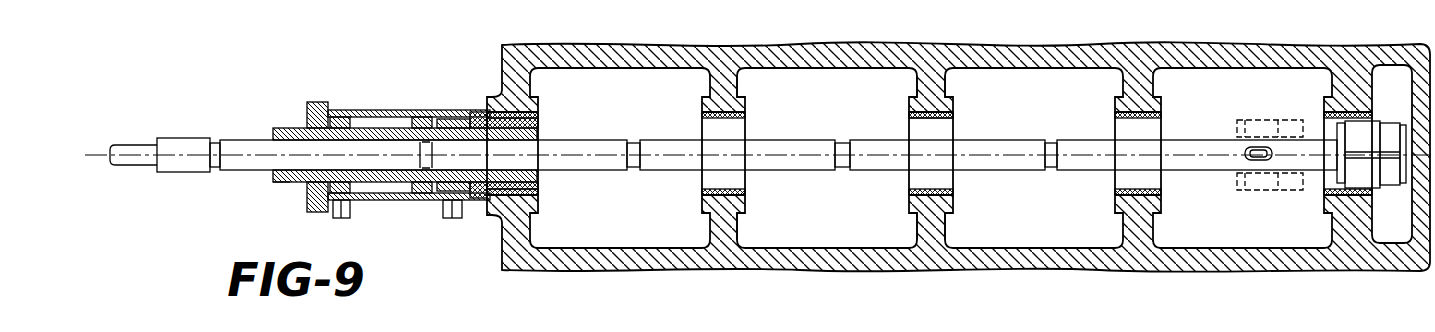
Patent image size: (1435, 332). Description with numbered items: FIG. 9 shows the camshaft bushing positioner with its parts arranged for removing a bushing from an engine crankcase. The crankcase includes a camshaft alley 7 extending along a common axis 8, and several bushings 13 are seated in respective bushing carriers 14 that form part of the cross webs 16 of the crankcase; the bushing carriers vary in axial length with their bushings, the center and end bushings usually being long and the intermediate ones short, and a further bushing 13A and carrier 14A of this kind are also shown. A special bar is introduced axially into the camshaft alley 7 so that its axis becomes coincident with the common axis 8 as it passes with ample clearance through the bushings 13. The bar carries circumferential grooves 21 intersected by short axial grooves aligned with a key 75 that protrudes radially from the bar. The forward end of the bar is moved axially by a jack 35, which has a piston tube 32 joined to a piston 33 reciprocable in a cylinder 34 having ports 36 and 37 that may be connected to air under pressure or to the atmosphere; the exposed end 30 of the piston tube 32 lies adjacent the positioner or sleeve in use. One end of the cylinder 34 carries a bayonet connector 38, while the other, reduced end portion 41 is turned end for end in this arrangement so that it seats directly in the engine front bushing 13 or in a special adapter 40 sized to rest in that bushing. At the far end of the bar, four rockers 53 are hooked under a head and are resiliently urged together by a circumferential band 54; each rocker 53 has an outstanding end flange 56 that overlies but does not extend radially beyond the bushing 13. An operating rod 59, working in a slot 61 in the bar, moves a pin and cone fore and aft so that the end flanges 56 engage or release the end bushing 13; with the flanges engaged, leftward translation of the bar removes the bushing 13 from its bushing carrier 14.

The camshaft alley 7 is at (827, 158).
The common axis 8 is at (800, 150).
The bushing 13 is at (700, 120).
The bushing 13A is at (956, 126).
The bushing carrier 14 is at (532, 103).
The partition wall 14A is at (950, 202).
The cross web 16 is at (705, 228).
The circumferential groove 21 is at (217, 140).
The exposed end 30 is at (275, 178).
The piston tube 32 is at (291, 128).
The piston 33 is at (424, 118).
The cylinder 34 is at (345, 115).
The jack 35 is at (408, 113).
The port 36 is at (452, 218).
The port 37 is at (340, 220).
The bayonet connector 38 is at (318, 102).
The special adapter 40 is at (540, 186).
The reduced end portion 41 is at (540, 128).
The rocker 53 is at (1352, 127).
The circumferential band 54 is at (1380, 123).
The end flange 56 is at (1403, 185).
The operating rod 59 is at (1262, 158).
The slot 61 is at (1245, 152).
The key 75 is at (151, 138).